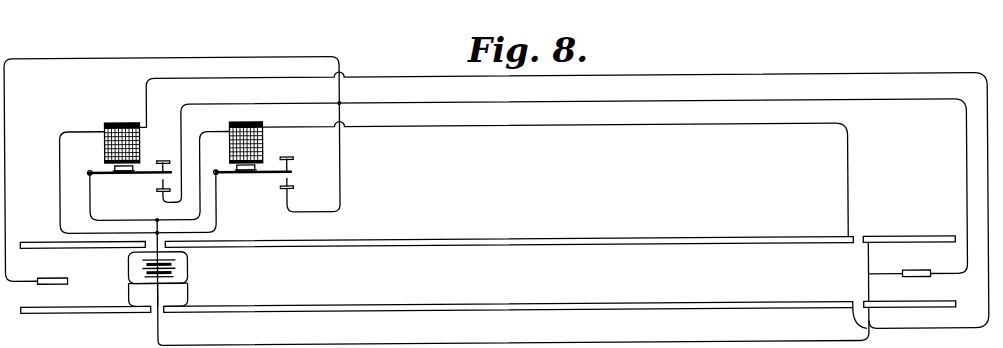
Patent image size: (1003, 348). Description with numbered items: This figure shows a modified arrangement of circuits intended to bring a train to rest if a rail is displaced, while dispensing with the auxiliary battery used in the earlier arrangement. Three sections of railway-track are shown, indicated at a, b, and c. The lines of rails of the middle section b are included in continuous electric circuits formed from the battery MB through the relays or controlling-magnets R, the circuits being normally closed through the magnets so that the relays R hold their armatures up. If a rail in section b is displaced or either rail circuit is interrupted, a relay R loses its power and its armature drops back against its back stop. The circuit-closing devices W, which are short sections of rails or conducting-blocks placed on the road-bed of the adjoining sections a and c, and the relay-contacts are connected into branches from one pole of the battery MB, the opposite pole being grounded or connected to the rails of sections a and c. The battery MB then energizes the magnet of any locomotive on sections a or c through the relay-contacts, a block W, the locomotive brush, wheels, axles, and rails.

The relay R is at (140, 144).
The battery MB is at (167, 266).
The track section a is at (85, 277).
The track section b is at (508, 266).
The track section c is at (909, 271).
The conducting-block W is at (483, 267).